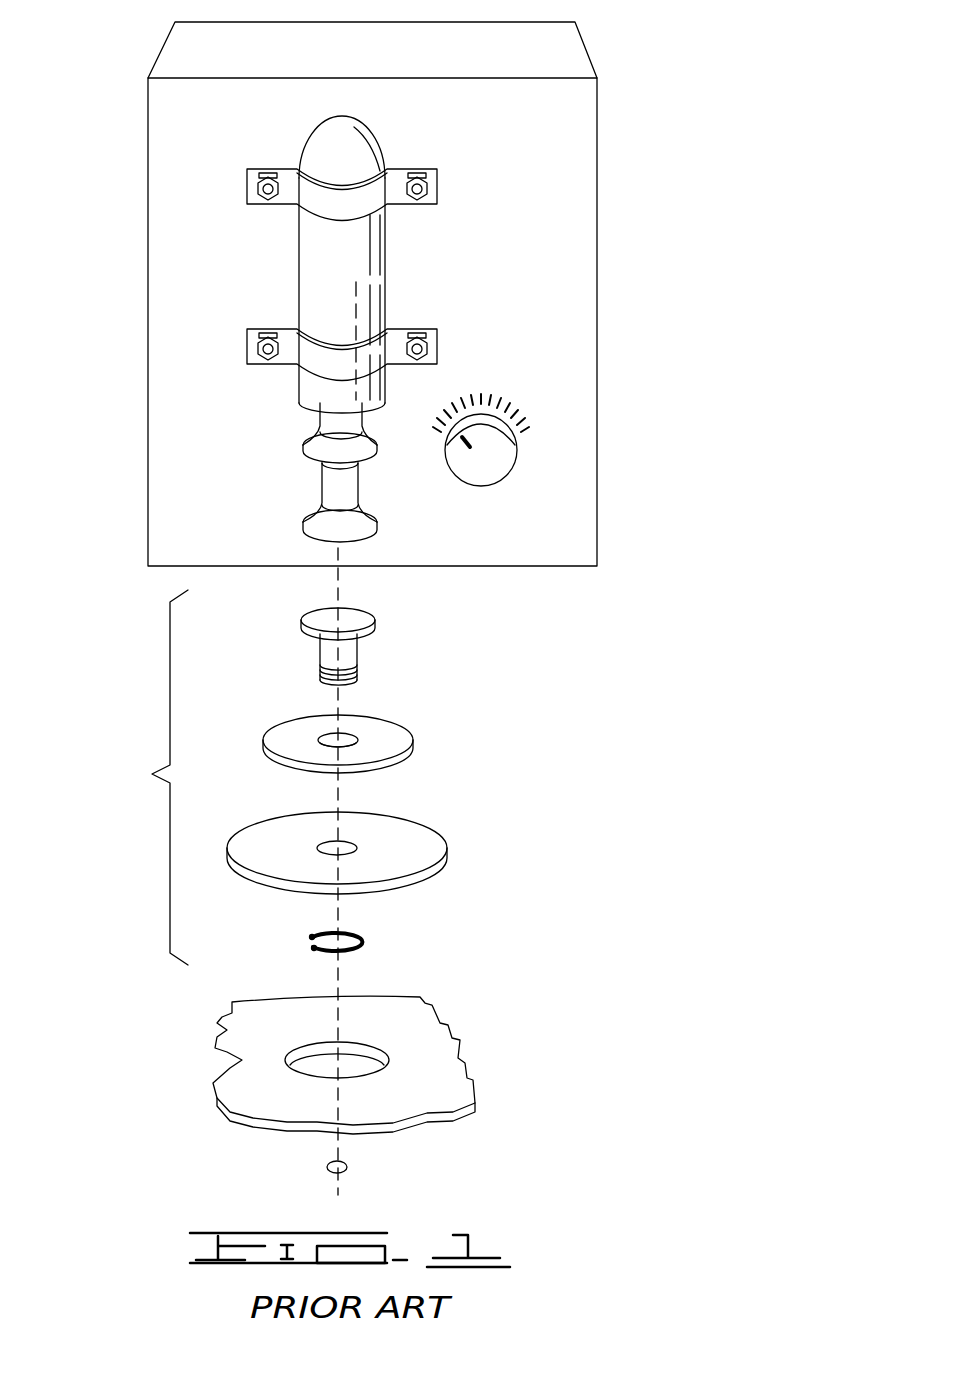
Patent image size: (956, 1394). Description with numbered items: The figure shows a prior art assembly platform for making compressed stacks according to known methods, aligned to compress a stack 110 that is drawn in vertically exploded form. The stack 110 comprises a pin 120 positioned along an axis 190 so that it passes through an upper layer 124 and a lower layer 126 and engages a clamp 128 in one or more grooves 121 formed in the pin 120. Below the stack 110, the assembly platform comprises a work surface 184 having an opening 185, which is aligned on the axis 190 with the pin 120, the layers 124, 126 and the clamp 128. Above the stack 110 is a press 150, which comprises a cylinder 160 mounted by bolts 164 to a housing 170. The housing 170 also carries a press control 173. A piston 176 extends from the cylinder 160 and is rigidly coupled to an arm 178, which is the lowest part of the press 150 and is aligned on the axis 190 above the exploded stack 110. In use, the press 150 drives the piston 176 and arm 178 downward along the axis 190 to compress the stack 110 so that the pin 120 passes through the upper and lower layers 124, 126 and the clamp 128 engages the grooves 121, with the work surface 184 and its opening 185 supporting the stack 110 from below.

The press 150 is at (642, 45).
The housing 170 is at (508, 144).
The cylinder 160 is at (300, 282).
The bolts 164 is at (248, 192).
The piston 176 is at (320, 432).
The arm 178 is at (305, 520).
The press control 173 is at (502, 460).
The stack 110 is at (152, 774).
The pin 120 is at (332, 651).
The grooves 121 is at (356, 672).
The upper layer 124 is at (395, 732).
The lower layer 126 is at (420, 848).
The clamp 128 is at (360, 940).
The work surface 184 is at (447, 1070).
The opening 185 is at (307, 1062).
The axis 190 is at (325, 1167).